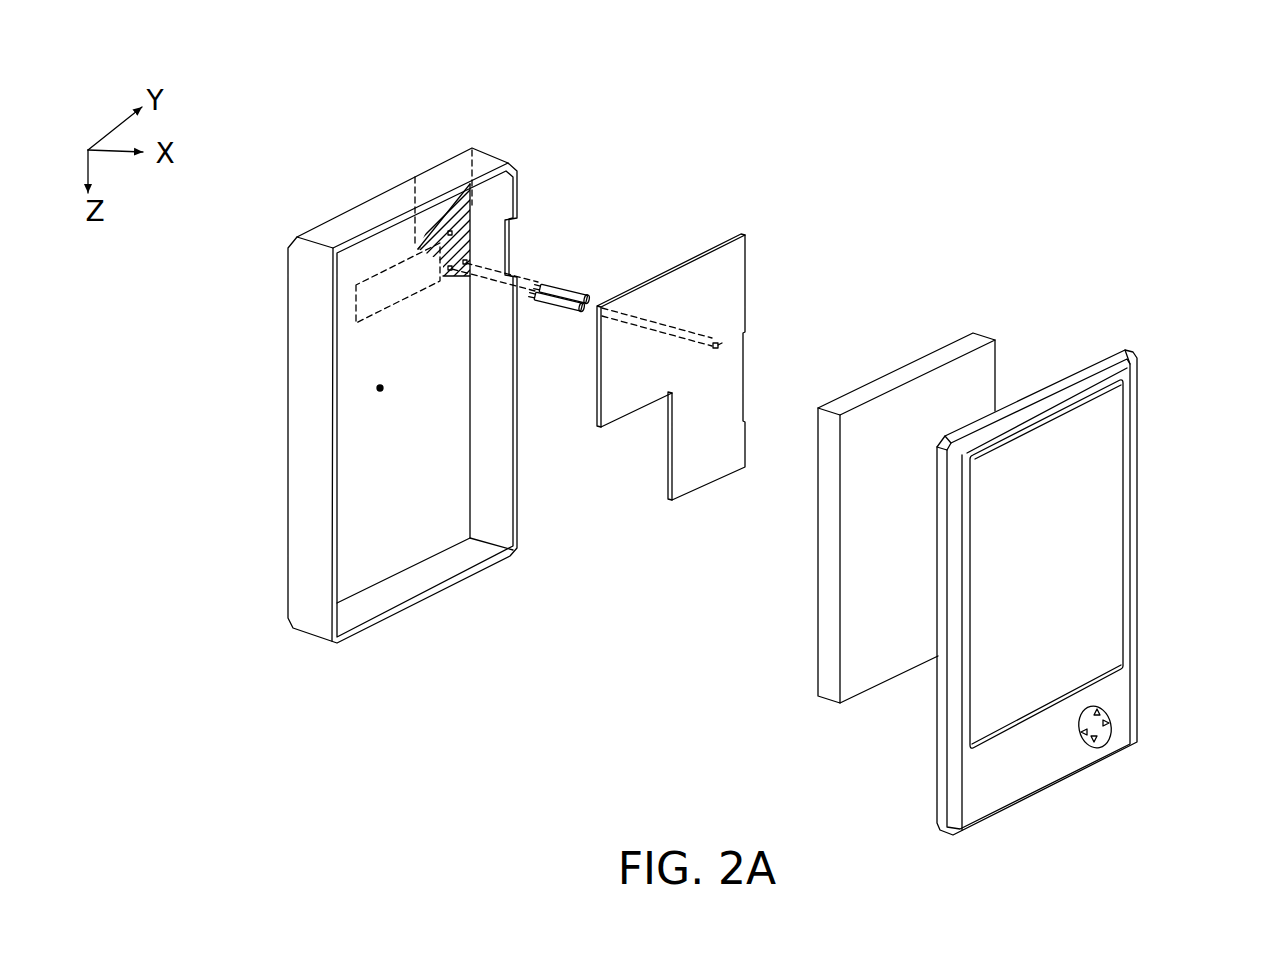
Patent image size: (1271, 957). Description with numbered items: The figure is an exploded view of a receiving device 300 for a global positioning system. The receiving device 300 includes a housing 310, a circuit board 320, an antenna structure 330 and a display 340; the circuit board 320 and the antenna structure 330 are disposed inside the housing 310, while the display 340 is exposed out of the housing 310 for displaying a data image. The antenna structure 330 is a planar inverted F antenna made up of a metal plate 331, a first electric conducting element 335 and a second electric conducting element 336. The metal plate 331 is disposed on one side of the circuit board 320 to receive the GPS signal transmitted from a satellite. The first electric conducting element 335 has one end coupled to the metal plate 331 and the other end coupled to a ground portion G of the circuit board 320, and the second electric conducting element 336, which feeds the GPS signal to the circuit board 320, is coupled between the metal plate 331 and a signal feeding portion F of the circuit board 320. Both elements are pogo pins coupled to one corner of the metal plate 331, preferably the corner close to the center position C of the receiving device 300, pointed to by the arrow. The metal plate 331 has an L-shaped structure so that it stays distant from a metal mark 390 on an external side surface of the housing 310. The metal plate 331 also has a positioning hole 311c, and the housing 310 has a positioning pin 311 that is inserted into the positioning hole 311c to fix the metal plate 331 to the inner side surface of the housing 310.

The receiving device 300 is at (1160, 136).
The housing 310 is at (472, 148).
The positioning pin 311 is at (422, 243).
The positioning hole 311c is at (411, 244).
The metal mark 390 is at (356, 301).
The center position C is at (373, 386).
The antenna structure 330 is at (612, 244).
The metal plate 331 is at (472, 201).
The first electric conducting element 335 is at (556, 289).
The second electric conducting element 336 is at (579, 296).
The circuit board 320 is at (730, 352).
The signal feeding portion F is at (721, 349).
The ground portion G is at (718, 351).
The display 340 is at (994, 340).